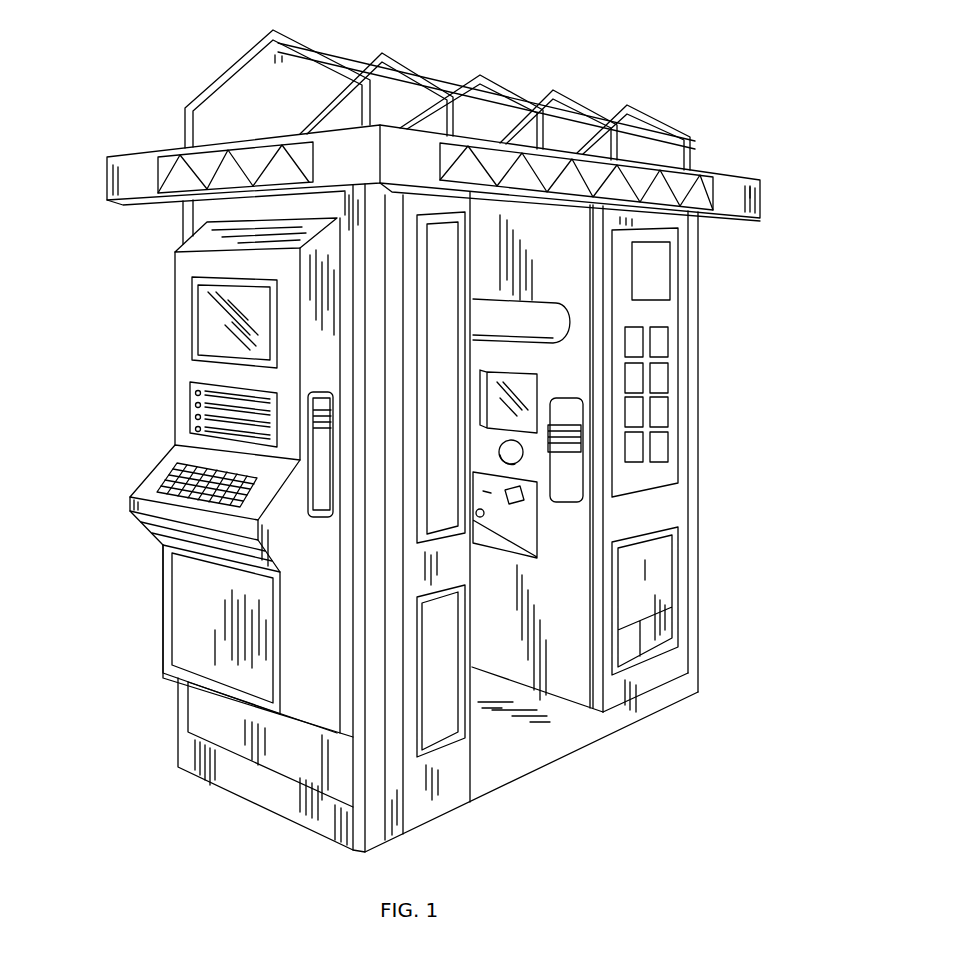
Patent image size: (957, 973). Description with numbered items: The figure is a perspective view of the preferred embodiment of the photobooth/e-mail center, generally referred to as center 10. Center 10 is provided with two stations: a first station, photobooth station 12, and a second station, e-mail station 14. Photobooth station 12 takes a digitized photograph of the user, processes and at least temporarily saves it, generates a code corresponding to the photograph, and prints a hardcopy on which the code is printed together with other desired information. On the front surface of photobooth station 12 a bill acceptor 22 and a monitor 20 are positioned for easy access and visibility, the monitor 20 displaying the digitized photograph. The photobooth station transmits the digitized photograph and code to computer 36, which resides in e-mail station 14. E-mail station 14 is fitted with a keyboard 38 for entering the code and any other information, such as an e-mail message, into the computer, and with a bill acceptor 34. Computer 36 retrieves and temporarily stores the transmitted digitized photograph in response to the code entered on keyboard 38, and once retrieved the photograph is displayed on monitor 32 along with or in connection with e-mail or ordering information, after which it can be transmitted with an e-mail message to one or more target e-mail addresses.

The center 10 is at (682, 44).
The photobooth station 12 is at (725, 440).
The e-mail station 14 is at (147, 452).
The monitor 20 is at (522, 395).
The bill acceptor 22 is at (522, 462).
The monitor 32 is at (215, 309).
The bill acceptor 34 is at (318, 597).
The computer 36 is at (182, 624).
The keyboard 38 is at (132, 510).